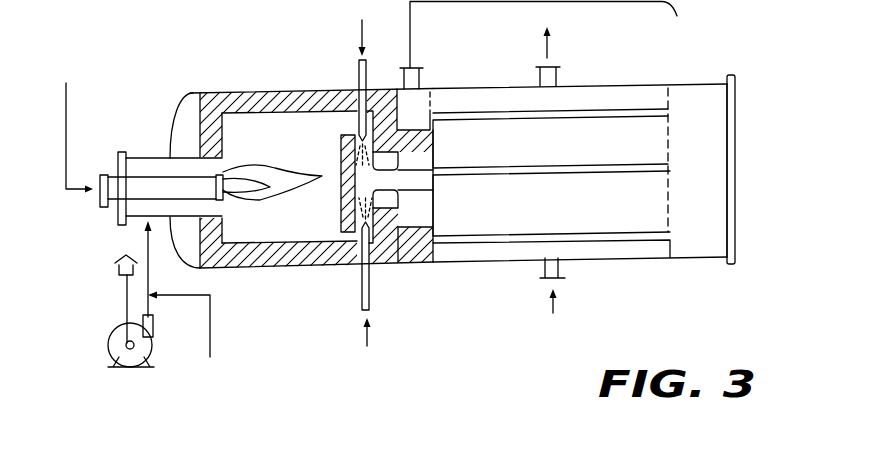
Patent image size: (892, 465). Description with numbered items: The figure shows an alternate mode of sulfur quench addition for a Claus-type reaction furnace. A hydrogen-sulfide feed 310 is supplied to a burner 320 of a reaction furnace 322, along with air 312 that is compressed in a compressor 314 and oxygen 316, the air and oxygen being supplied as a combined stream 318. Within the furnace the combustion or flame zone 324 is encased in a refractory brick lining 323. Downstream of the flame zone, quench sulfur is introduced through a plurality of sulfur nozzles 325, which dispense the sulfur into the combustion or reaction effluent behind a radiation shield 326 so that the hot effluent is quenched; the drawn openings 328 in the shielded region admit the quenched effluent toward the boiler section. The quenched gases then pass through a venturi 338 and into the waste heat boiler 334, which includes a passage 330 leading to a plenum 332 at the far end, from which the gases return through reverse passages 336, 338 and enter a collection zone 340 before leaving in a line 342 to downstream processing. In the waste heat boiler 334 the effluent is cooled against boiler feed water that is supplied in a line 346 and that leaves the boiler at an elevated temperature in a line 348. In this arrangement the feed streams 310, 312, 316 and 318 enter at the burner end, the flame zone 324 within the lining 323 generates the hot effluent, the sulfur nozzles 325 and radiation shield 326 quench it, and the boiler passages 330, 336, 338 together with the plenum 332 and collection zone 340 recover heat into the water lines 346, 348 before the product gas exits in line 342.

The hydrogen-sulfide feed 310 is at (68, 143).
The air 312 is at (126, 307).
The compressor 314 is at (109, 352).
The oxygen 316 is at (212, 348).
The combined stream 318 is at (147, 253).
The burner 320 is at (153, 158).
The reaction furnace 322 is at (286, 88).
The refractory brick lining 323 is at (299, 269).
The combustion or flame zone 324 is at (292, 154).
The sulfur nozzles 325 is at (368, 77).
The radiation shield 326 is at (338, 164).
The passage 328 is at (386, 177).
The passage 330 is at (494, 166).
The plenum 332 is at (712, 176).
The waste heat boiler 334 is at (614, 72).
The reverse passage 336 is at (549, 112).
The venturi 338 is at (468, 234).
The collection zone 340 is at (420, 100).
The line 342 is at (552, 46).
The line 346 is at (556, 306).
The line 348 is at (553, 46).